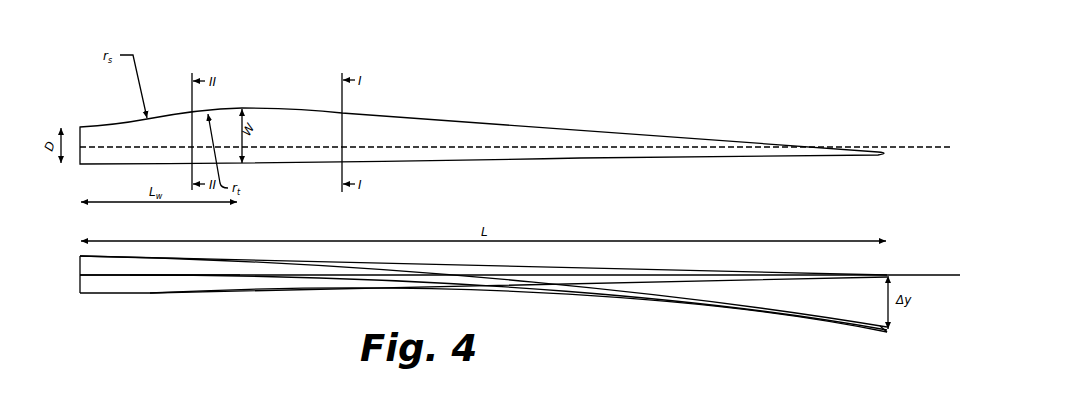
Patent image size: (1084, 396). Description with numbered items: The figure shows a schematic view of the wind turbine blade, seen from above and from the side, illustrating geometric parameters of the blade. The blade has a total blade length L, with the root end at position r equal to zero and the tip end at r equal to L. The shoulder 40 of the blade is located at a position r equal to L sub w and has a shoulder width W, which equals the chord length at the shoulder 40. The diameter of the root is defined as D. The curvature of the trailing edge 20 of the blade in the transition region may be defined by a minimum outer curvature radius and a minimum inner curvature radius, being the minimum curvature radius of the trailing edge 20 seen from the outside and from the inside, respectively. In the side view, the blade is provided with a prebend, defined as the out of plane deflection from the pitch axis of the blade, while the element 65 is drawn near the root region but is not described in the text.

The trailing edge 20 is at (370, 281).
The shoulder 40 is at (242, 107).
The hub 65 is at (232, 284).